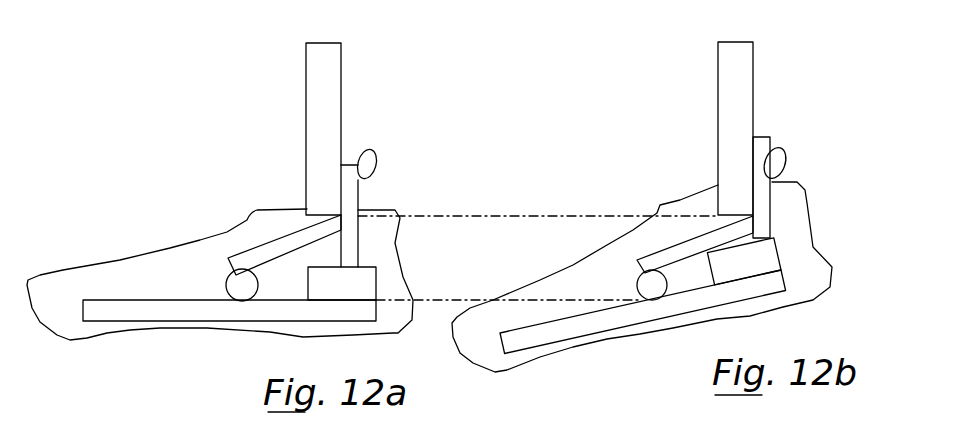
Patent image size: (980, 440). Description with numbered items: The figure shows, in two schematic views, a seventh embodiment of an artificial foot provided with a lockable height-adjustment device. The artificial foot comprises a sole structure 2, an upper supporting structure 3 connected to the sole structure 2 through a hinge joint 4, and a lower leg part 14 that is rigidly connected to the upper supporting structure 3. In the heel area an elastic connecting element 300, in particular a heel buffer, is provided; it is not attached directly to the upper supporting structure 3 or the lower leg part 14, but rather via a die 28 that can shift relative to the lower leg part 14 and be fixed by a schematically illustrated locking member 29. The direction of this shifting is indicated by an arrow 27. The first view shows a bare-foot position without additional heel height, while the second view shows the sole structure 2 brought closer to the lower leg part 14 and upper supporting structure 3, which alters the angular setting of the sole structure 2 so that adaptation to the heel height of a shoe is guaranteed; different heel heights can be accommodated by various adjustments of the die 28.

In FIG. 12A, the sole structure 2 is at (158, 340).
In FIG. 12B, the sole structure 2 is at (643, 312).
In FIG. 12A, the upper supporting structure 3 is at (262, 242).
In FIG. 12B, the upper supporting structure 3 is at (695, 244).
In FIG. 12A, the hinge joint 4 is at (228, 289).
In FIG. 12B, the hinge joint 4 is at (652, 285).
In FIG. 12A, the lower leg part 14 is at (341, 87).
In FIG. 12B, the lower leg part 14 is at (735, 128).
In FIG. 12A, the pivot direction 27 is at (382, 181).
In FIG. 12B, the pivot direction 27 is at (793, 163).
In FIG. 12A, the die 28 is at (358, 233).
In FIG. 12B, the die 28 is at (770, 203).
In FIG. 12A, the locking member 29 is at (375, 150).
In FIG. 12B, the locking member 29 is at (787, 148).
In FIG. 12A, the elastic connecting element 300 is at (376, 280).
In FIG. 12B, the elastic connecting element 300 is at (744, 261).